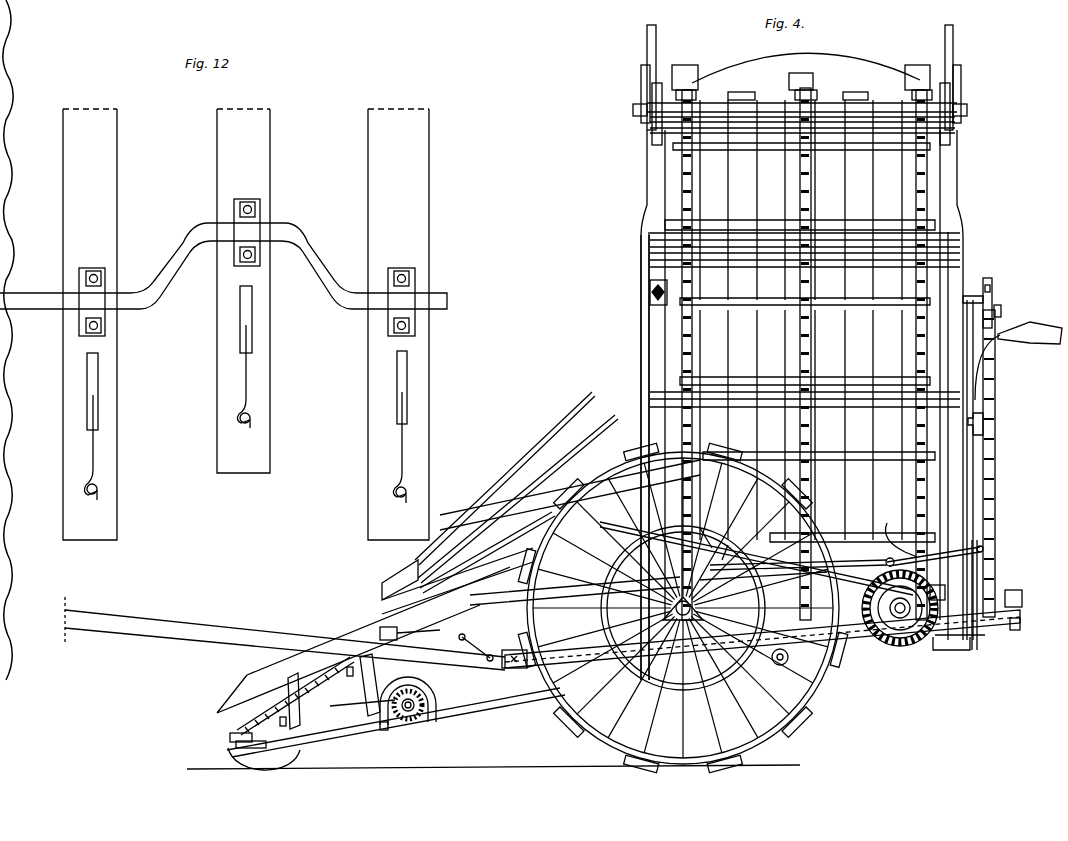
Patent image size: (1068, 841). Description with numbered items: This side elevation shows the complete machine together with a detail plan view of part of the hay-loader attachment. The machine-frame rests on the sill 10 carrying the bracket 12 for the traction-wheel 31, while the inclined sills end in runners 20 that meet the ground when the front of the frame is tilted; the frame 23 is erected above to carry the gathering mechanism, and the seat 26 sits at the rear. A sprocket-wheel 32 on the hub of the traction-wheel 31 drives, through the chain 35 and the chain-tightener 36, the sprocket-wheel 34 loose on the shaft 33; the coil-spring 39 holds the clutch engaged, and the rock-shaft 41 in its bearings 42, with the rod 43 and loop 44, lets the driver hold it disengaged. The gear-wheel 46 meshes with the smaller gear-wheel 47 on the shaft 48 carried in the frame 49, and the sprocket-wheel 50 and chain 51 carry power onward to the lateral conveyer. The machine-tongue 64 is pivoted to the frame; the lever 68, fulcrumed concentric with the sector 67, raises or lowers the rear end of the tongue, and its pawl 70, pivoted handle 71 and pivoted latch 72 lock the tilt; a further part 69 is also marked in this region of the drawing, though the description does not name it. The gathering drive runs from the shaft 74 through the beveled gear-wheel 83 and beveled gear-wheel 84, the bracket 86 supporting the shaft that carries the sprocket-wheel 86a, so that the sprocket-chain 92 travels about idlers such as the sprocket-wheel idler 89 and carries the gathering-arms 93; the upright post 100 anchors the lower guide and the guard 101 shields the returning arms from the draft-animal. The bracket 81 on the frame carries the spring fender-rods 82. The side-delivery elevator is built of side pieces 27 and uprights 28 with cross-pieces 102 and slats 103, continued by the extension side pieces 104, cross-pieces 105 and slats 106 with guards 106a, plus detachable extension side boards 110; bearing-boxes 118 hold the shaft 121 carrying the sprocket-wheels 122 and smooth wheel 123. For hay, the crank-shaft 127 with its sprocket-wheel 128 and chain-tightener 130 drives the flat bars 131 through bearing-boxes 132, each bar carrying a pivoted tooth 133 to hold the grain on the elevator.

In FIG. 4, the sill 10 is at (761, 639).
In FIG. 4, the bracket 12 is at (683, 608).
In FIG. 4, the runner 20 is at (235, 760).
In FIG. 4, the frame 23 is at (541, 537).
In FIG. 4, the seat 26 is at (1032, 328).
In FIG. 4, the side piece 27 is at (649, 340).
In FIG. 4, the upright 28 is at (641, 312).
In FIG. 4, the traction-wheel 31 is at (818, 695).
In FIG. 4, the sprocket-wheel 32 is at (765, 594).
In FIG. 4, the shaft 33 is at (903, 612).
In FIG. 4, the sprocket-wheel 34 is at (890, 618).
In FIG. 4, the chain 35 is at (820, 572).
In FIG. 4, the chain-tightener 36 is at (781, 666).
In FIG. 4, the extensile coil-spring 39 is at (762, 552).
In FIG. 4, the rock-shaft 41 is at (952, 650).
In FIG. 4, the bearing 42 is at (977, 650).
In FIG. 4, the rod 43 is at (973, 496).
In FIG. 4, the loop 44 is at (983, 424).
In FIG. 4, the gear-wheel 46 is at (898, 646).
In FIG. 4, the gear-wheel 47 is at (945, 590).
In FIG. 4, the shaft 48 is at (350, 738).
In FIG. 4, the frame 49 is at (1022, 600).
In FIG. 4, the sprocket-wheel 50 is at (1020, 624).
In FIG. 4, the chain 51 is at (995, 472).
In FIG. 4, the machine-tongue 64 is at (150, 616).
In FIG. 4, the sector 67 is at (708, 530).
In FIG. 4, the lever 68 is at (857, 562).
In FIG. 4, the deck rail 69 is at (572, 606).
In FIG. 4, the pawl 70 is at (728, 548).
In FIG. 4, the pivoted handle 71 is at (901, 527).
In FIG. 4, the pivoted latch 72 is at (985, 548).
In FIG. 4, the shaft 74 is at (408, 712).
In FIG. 4, the bracket 81 is at (393, 580).
In FIG. 4, the spring fender-rod 82 is at (532, 442).
In FIG. 4, the beveled gear-wheel 83 is at (428, 712).
In FIG. 4, the beveled gear-wheel 84 is at (362, 707).
In FIG. 4, the bracket 86 is at (383, 730).
In FIG. 4, the sprocket-wheel 86a is at (397, 630).
In FIG. 4, the sprocket-wheel idler 89 is at (230, 736).
In FIG. 4, the sprocket-chain 92 is at (300, 685).
In FIG. 4, the gathering-arm 93 is at (352, 672).
In FIG. 4, the upright post 100 is at (236, 744).
In FIG. 4, the guard 101 is at (237, 703).
In FIG. 4, the cross-piece 102 is at (858, 268).
In FIG. 4, the longitudinal slat 103 is at (805, 426).
In FIG. 4, the extension side piece 104 is at (647, 165).
In FIG. 4, the cross-piece 105 is at (742, 140).
In FIG. 4, the slat 106 is at (902, 170).
In FIG. 4, the guard 106a is at (652, 95).
In FIG. 4, the extension side piece 110 is at (647, 38).
In FIG. 4, the bearing-box 118 is at (641, 70).
In FIG. 4, the shaft 121 is at (633, 110).
In FIG. 4, the sprocket-wheel 122 is at (692, 98).
In FIG. 4, the smooth wheel 123 is at (812, 98).
In FIG. 12, the crank-shaft 127 is at (58, 294).
In FIG. 4, the crank-shaft 127 is at (970, 300).
In FIG. 4, the sprocket-wheel 128 is at (992, 300).
In FIG. 4, the adjustable chain-tightener 130 is at (1001, 310).
In FIG. 12, the flat bar 131 is at (246, 324).
In FIG. 4, the flat bar 131 is at (806, 63).
In FIG. 12, the bearing-box 132 is at (105, 268).
In FIG. 12, the pivoted tooth 133 is at (98, 441).